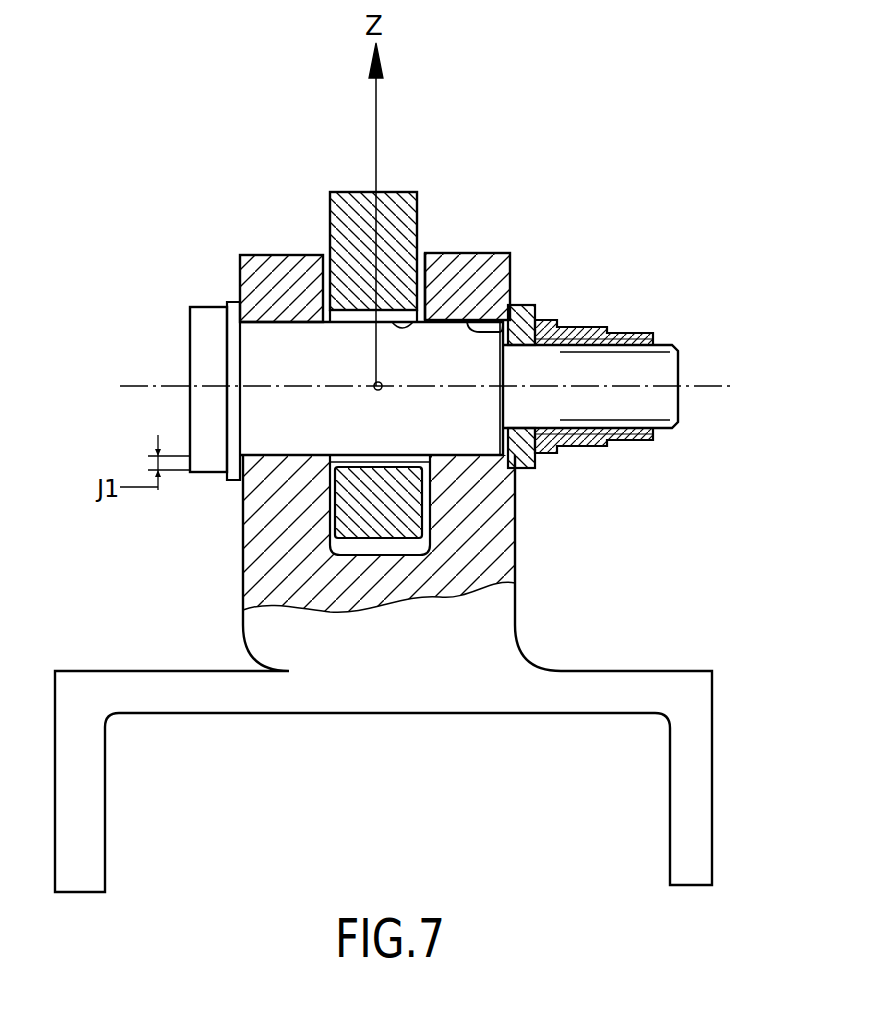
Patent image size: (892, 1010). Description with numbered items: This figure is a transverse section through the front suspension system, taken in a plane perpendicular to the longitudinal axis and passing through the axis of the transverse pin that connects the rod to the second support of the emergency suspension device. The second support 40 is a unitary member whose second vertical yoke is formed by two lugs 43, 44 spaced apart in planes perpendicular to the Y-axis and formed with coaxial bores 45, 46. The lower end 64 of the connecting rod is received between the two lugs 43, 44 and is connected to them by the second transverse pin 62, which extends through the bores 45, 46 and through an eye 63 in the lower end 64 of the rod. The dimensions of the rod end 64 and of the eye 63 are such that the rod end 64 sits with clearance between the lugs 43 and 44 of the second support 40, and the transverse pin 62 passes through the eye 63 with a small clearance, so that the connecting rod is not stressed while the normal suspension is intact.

The second support 40 is at (483, 633).
The lug 43 is at (497, 253).
The lug 44 is at (265, 257).
The bore 45 is at (537, 312).
The bore 46 is at (265, 325).
The second transverse pin 62 is at (467, 442).
The eye 63 is at (445, 268).
The lower end of the connecting rod 64 is at (410, 192).